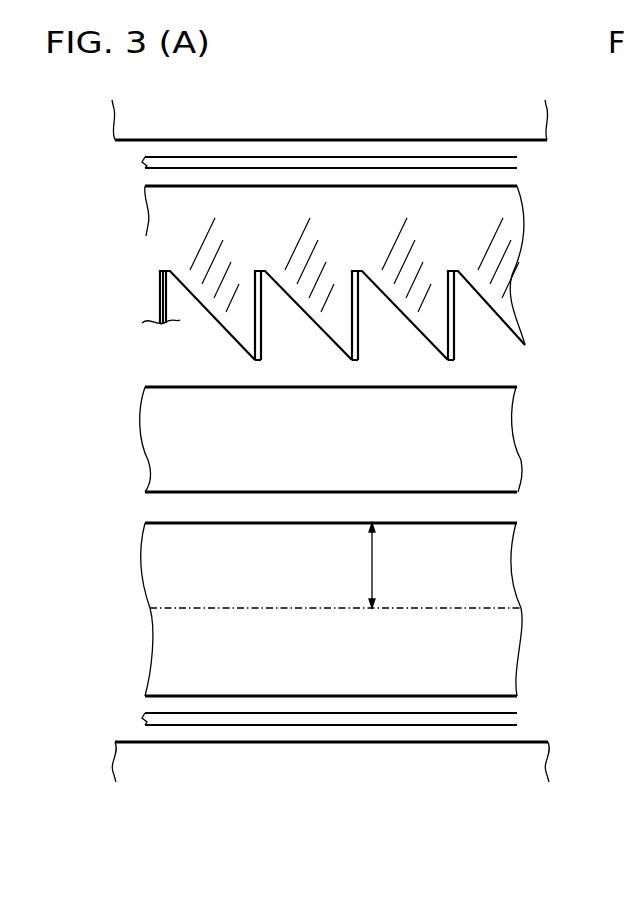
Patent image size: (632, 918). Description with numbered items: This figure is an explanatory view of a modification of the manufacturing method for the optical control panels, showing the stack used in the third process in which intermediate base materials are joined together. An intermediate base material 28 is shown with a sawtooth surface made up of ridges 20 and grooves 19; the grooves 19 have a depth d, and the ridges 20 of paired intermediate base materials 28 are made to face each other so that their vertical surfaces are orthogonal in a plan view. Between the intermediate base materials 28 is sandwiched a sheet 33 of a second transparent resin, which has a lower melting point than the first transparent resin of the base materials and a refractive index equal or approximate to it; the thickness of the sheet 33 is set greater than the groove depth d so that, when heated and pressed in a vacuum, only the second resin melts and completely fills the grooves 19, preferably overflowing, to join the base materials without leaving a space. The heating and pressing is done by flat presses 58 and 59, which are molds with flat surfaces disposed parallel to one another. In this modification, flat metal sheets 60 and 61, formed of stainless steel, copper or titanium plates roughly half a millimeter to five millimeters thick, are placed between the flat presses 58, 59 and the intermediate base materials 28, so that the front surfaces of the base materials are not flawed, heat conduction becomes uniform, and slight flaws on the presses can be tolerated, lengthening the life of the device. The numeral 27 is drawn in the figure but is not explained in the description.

The groove 19 is at (389, 334).
The ridge 20 is at (243, 328).
The vertical surface of prism 27 is at (348, 301).
The intermediate base material 28 is at (530, 232).
The sheet of second transparent resin 33 is at (165, 405).
The flat press 58 is at (527, 132).
The flat press 59 is at (520, 760).
The flat metal sheet 60 is at (371, 165).
The flat metal sheet 61 is at (372, 718).